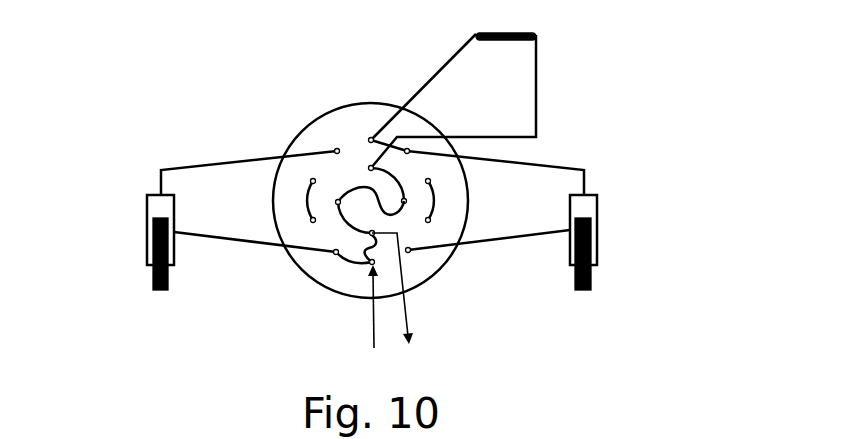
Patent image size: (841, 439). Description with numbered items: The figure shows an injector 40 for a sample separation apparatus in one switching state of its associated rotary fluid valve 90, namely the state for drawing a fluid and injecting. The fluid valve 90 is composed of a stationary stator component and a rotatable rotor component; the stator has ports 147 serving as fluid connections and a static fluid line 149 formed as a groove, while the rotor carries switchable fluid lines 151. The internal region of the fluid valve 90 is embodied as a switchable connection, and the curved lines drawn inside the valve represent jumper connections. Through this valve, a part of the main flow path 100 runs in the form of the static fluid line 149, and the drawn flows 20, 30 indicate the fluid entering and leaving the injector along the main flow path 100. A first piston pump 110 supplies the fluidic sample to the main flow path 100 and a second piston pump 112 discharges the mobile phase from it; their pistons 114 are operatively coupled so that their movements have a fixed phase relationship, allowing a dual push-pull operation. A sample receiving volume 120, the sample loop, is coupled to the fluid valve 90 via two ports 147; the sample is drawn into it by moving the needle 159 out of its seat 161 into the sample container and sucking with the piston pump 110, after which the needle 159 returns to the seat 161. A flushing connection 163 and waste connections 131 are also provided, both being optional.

The injector 40 is at (165, 87).
The rotary fluid valve 90 is at (312, 282).
The main flow path 100 is at (372, 327).
The inlet flow 20 is at (373, 318).
The outlet flow 30 is at (396, 302).
The first piston pump 110 is at (147, 226).
The second piston pump 112 is at (598, 220).
The piston 114 is at (152, 278).
The sample receiving volume 120 is at (524, 41).
The needle 159 is at (542, 72).
The seat 161 is at (542, 112).
The port 147 is at (370, 138).
The fluid line of the rotor component 151 is at (368, 172).
The static fluid line 149 is at (342, 190).
The waste connection 131 is at (311, 182).
The flushing connection 163 is at (311, 220).